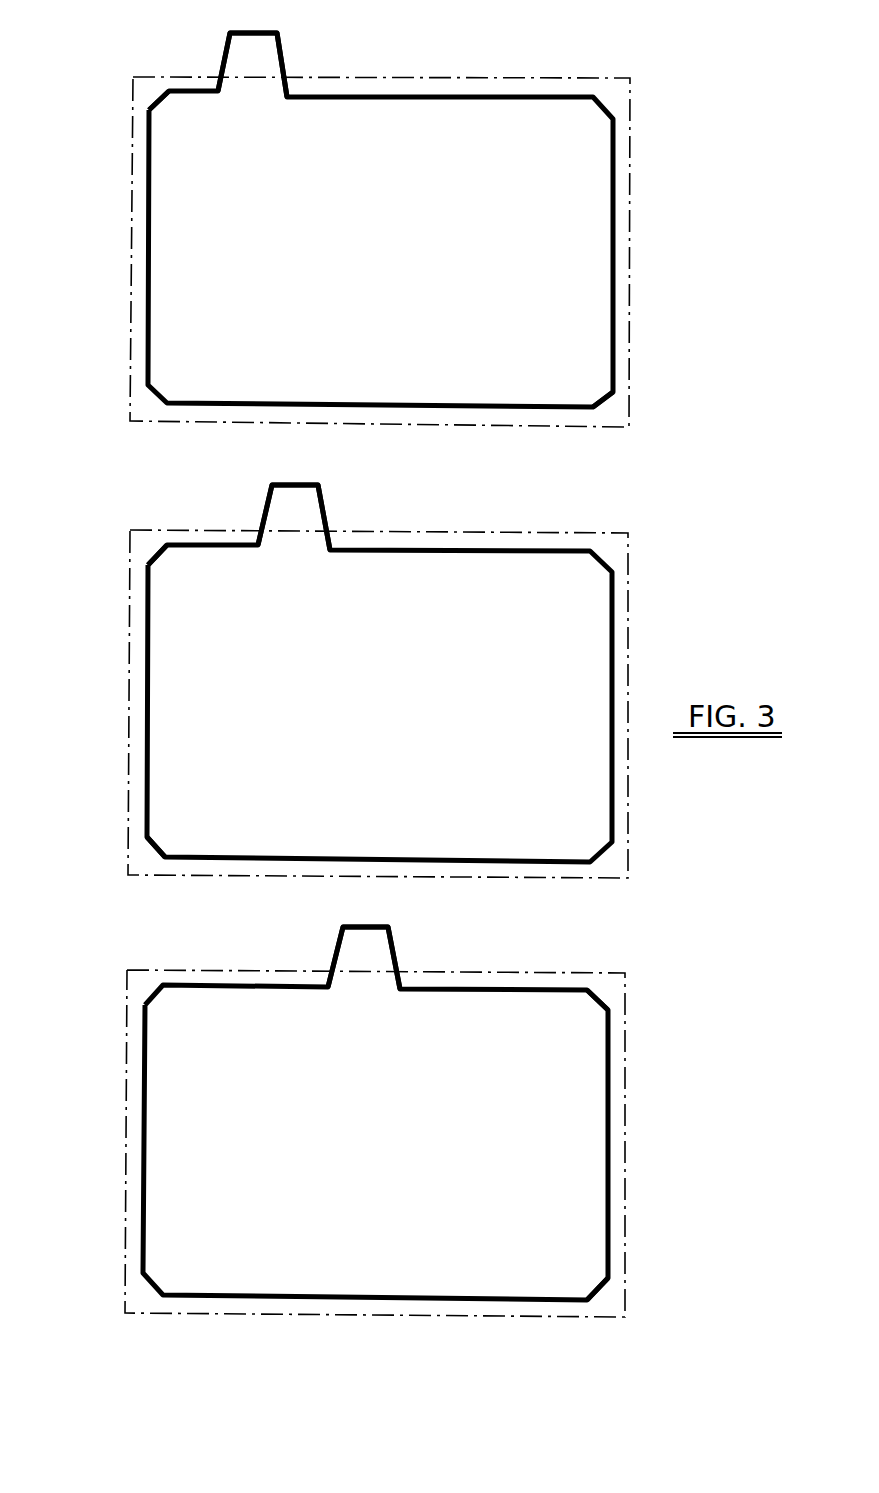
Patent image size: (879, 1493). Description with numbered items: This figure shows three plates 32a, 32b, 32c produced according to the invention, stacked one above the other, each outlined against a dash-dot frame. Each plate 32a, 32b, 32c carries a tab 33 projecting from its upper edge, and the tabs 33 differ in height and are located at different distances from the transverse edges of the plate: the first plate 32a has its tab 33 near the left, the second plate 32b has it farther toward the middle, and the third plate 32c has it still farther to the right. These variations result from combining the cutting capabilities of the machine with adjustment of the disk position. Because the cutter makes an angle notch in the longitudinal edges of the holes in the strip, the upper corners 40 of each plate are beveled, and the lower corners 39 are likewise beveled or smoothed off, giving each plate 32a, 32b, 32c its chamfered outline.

The plate 32a is at (380, 230).
The plate 32b is at (378, 681).
The plate 32c is at (375, 1122).
The tab 33 is at (267, 50).
The lower corners 39 is at (600, 398).
The upper corners 40 is at (158, 100).